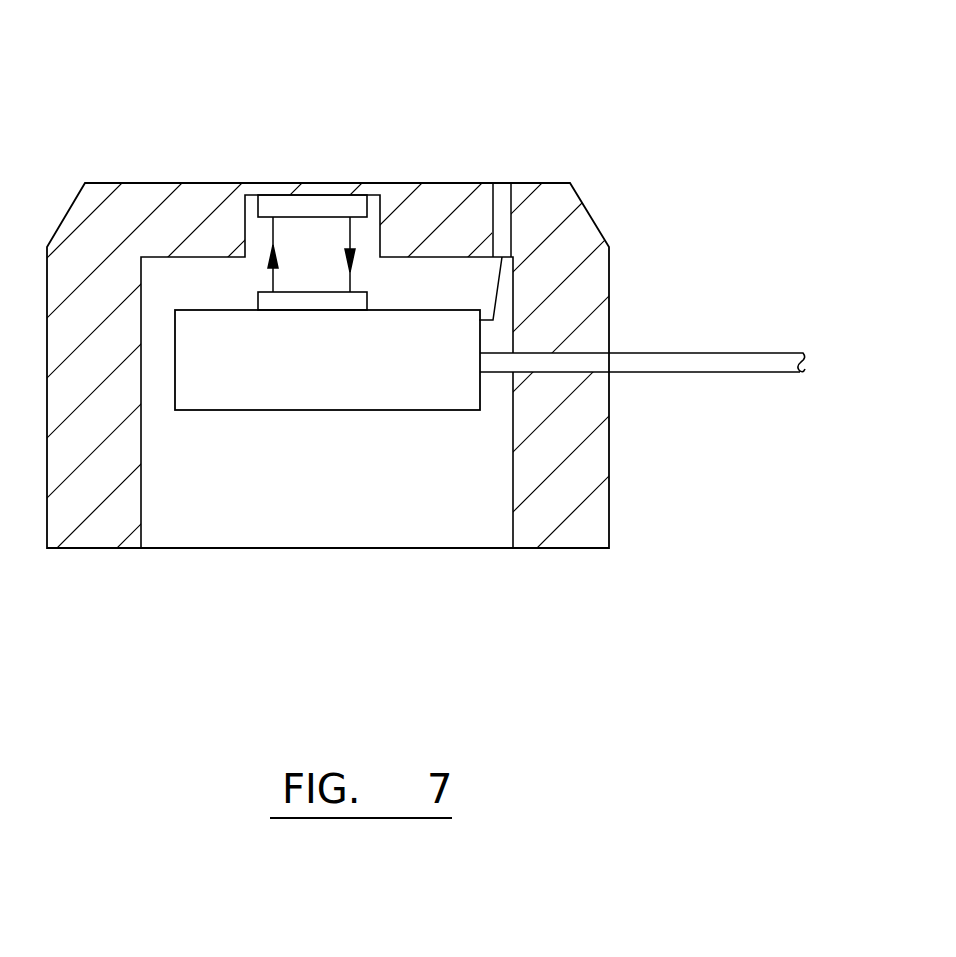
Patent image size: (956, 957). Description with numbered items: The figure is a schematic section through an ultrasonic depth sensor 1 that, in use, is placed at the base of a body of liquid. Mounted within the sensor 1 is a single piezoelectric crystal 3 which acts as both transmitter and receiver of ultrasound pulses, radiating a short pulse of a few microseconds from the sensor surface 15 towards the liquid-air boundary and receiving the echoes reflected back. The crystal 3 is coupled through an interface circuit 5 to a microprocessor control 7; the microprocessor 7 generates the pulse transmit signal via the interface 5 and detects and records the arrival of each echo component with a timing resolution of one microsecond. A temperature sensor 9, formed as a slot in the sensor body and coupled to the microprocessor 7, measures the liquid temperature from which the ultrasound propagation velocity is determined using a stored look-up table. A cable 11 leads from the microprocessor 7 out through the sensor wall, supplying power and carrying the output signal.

The sensor 1 is at (601, 231).
The sensor surface 15 is at (156, 183).
The temperature sensor 9 is at (501, 202).
The piezoelectric crystal 3 is at (312, 204).
The interface circuit 5 is at (358, 303).
The microprocessor control 7 is at (298, 371).
The cable 11 is at (735, 365).